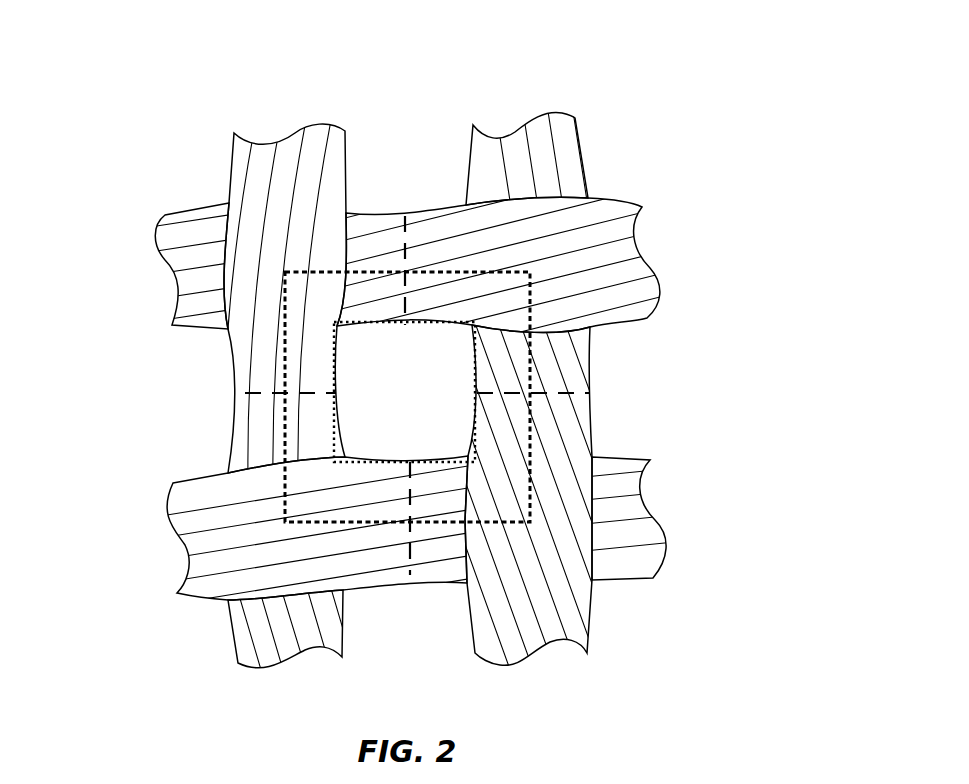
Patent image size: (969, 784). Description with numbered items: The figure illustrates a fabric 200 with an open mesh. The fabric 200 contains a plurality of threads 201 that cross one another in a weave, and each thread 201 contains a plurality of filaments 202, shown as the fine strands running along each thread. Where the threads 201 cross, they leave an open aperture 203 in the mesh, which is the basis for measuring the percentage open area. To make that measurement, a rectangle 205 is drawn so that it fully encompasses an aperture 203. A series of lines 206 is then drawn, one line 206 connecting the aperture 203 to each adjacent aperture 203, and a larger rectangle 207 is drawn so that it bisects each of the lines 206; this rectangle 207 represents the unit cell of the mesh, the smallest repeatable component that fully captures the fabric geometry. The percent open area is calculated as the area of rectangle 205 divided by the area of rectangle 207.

The fabric 200 is at (458, 348).
The thread 201 is at (292, 131).
The filament 202 is at (620, 223).
The aperture 203 is at (192, 181).
The rectangle 205 is at (332, 334).
The line 206 is at (403, 261).
The rectangle 207 is at (532, 375).